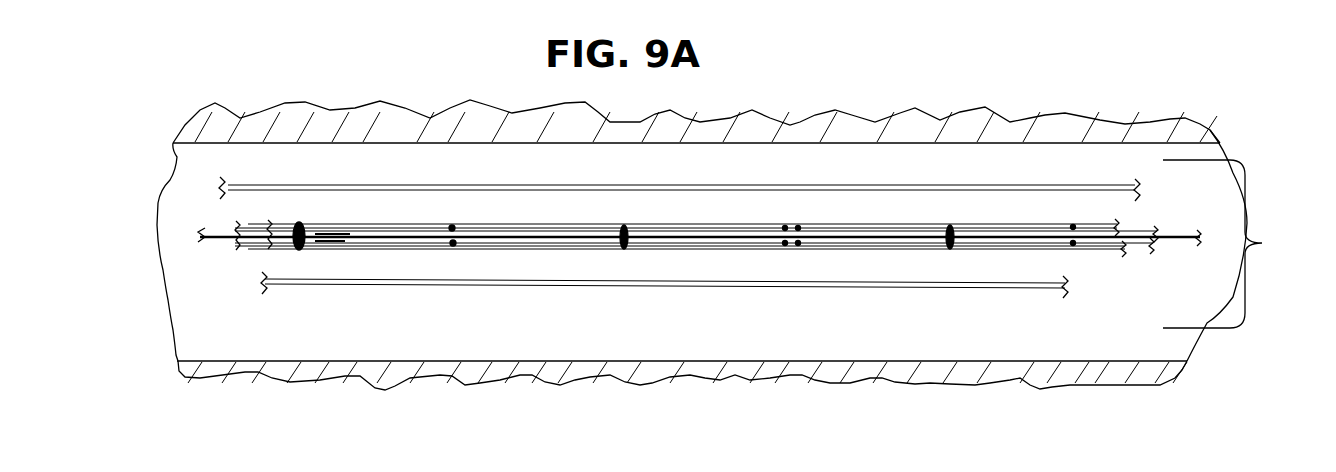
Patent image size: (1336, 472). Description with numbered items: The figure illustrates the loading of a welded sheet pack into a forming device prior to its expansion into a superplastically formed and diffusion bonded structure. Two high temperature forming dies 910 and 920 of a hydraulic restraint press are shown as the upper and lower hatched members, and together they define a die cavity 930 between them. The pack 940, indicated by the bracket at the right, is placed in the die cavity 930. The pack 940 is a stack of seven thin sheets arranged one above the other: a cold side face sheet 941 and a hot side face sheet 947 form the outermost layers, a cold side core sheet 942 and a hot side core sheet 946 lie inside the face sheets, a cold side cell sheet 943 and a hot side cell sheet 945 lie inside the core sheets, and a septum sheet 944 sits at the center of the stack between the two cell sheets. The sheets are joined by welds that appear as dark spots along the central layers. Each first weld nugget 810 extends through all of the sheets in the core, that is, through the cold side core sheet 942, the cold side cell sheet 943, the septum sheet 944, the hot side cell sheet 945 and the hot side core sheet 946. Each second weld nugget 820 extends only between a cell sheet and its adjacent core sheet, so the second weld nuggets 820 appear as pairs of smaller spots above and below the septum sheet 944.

The first weld nugget 810 is at (624, 226).
The second weld nugget 820 is at (454, 246).
The high temperature forming die 910 is at (915, 108).
The high temperature forming die 920 is at (981, 383).
The die cavity 930 is at (700, 328).
The pack 940 is at (1233, 244).
The cold side face sheet 941 is at (1062, 188).
The cold side core sheet 942 is at (1033, 227).
The cold side cell sheet 943 is at (1118, 228).
The septum sheet 944 is at (1188, 232).
The hot side cell sheet 945 is at (1140, 243).
The hot side core sheet 946 is at (1030, 244).
The hot side face sheet 947 is at (1037, 290).